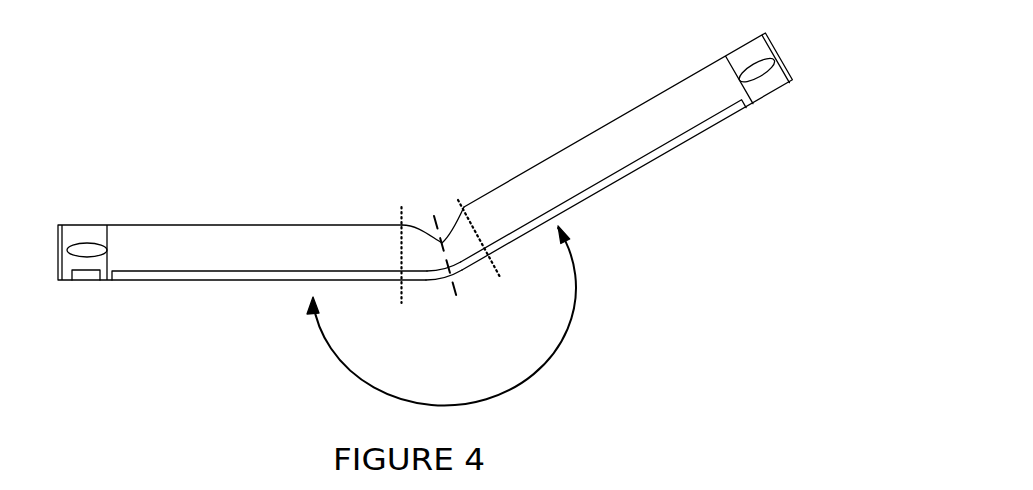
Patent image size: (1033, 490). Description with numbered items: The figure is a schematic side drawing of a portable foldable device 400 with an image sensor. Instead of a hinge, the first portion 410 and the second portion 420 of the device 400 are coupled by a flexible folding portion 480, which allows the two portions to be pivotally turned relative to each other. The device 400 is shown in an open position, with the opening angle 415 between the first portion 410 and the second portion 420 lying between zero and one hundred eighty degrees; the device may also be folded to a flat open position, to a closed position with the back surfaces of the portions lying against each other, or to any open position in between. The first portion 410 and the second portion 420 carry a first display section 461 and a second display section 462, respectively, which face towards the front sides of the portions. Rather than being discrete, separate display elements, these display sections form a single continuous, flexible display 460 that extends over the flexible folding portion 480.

The device 400 is at (199, 166).
The first portion 410 is at (257, 248).
The opening angle 415 is at (377, 226).
The second portion 420 is at (650, 127).
The flexible display 460 is at (185, 282).
The first display section 461 is at (438, 273).
The second display section 462 is at (475, 272).
The flexible folding portion 480 is at (420, 252).